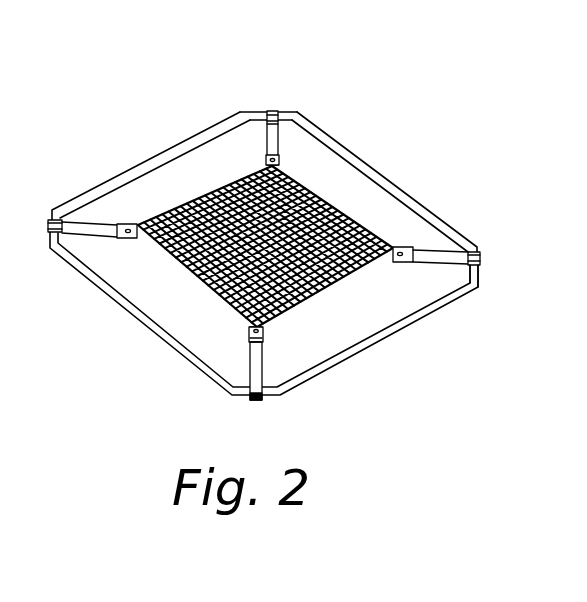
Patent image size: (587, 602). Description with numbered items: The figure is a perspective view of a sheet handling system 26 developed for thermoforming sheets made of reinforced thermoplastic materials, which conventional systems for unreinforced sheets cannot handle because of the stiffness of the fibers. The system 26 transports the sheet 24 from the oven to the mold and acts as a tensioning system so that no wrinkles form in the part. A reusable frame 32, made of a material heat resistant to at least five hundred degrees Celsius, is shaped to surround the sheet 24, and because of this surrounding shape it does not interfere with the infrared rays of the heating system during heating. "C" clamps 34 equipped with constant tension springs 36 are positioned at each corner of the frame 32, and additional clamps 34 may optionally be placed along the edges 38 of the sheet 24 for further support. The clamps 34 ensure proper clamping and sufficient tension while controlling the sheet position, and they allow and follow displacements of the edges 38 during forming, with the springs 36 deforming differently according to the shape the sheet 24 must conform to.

The sheet 24 is at (177, 203).
The sheet handling system 26 is at (440, 97).
The frame 32 is at (380, 338).
The "C" clamp 34 is at (410, 247).
The constant tension spring 36 is at (437, 265).
The edge 38 is at (302, 177).